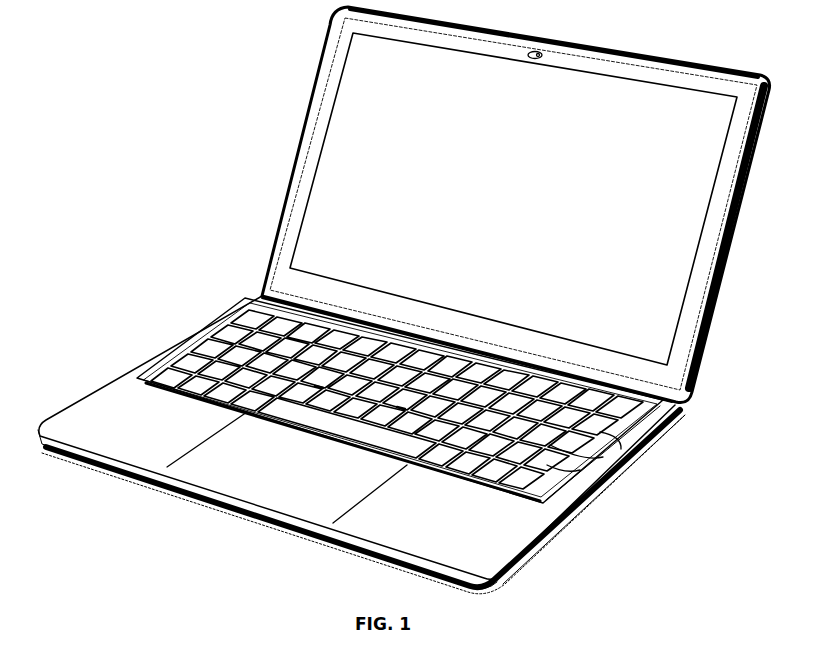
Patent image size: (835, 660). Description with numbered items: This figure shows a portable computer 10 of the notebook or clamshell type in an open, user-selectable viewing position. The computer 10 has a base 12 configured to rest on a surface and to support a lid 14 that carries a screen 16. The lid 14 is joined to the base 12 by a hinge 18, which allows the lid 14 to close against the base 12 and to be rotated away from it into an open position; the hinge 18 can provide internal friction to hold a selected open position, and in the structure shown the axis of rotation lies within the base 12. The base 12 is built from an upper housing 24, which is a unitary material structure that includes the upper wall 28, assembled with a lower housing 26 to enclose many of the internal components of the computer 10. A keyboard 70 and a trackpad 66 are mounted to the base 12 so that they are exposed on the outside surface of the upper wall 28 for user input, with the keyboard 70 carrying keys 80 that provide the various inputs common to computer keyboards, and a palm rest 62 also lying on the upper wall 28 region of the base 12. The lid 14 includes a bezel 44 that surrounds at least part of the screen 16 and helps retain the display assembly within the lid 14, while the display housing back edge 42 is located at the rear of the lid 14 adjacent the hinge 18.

The portable computer 10 is at (193, 78).
The base 12 is at (130, 338).
The lid 14 is at (268, 183).
The screen 16 is at (517, 191).
The hinge 18 is at (256, 283).
The upper housing 24 is at (88, 393).
The lower housing 26 is at (470, 588).
The upper wall 28 is at (198, 330).
The display housing back edge 42 is at (714, 307).
The bezel 44 is at (702, 259).
The palm rest 62 is at (183, 430).
The trackpad 66 is at (281, 480).
The keyboard 70 is at (243, 316).
The keys 80 is at (606, 456).